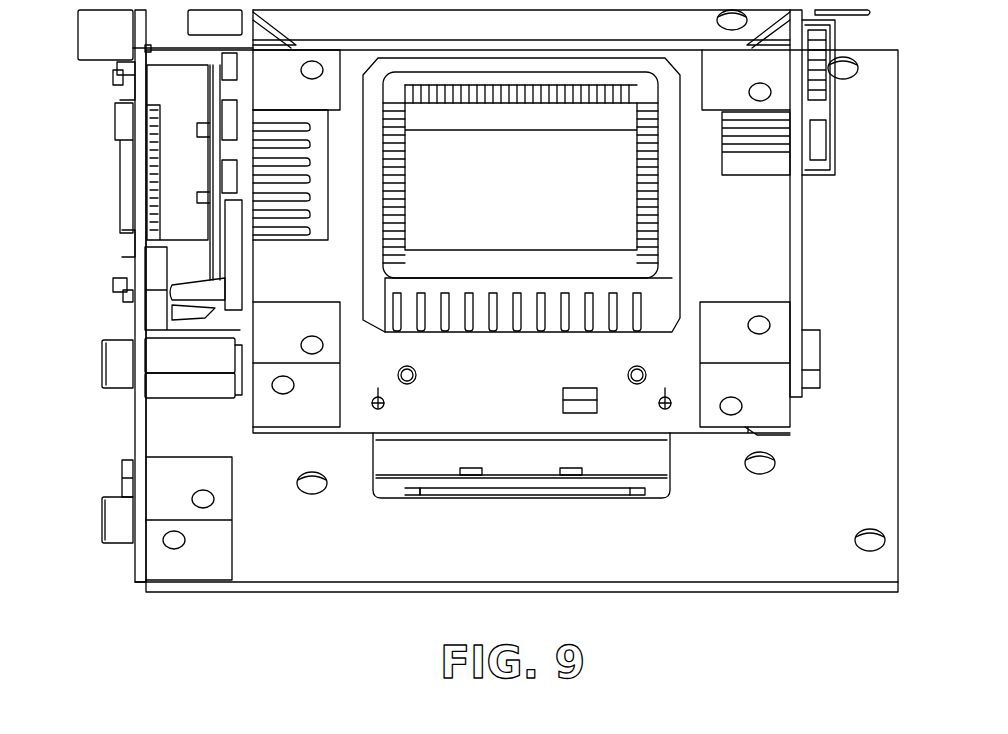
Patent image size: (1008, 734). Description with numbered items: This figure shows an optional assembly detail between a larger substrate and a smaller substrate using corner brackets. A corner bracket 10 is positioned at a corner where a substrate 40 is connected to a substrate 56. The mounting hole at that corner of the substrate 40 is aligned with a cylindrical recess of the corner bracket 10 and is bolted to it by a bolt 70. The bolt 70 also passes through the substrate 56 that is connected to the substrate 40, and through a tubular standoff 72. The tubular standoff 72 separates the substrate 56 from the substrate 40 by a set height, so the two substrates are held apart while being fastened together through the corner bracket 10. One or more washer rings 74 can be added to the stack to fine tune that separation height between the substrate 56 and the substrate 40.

The corner bracket 10 is at (488, 301).
The substrate 40 is at (248, 198).
The substrate 56 is at (135, 433).
The bolt 70 is at (115, 365).
The tubular standoff 72 is at (160, 355).
The washer ring 74 is at (237, 383).